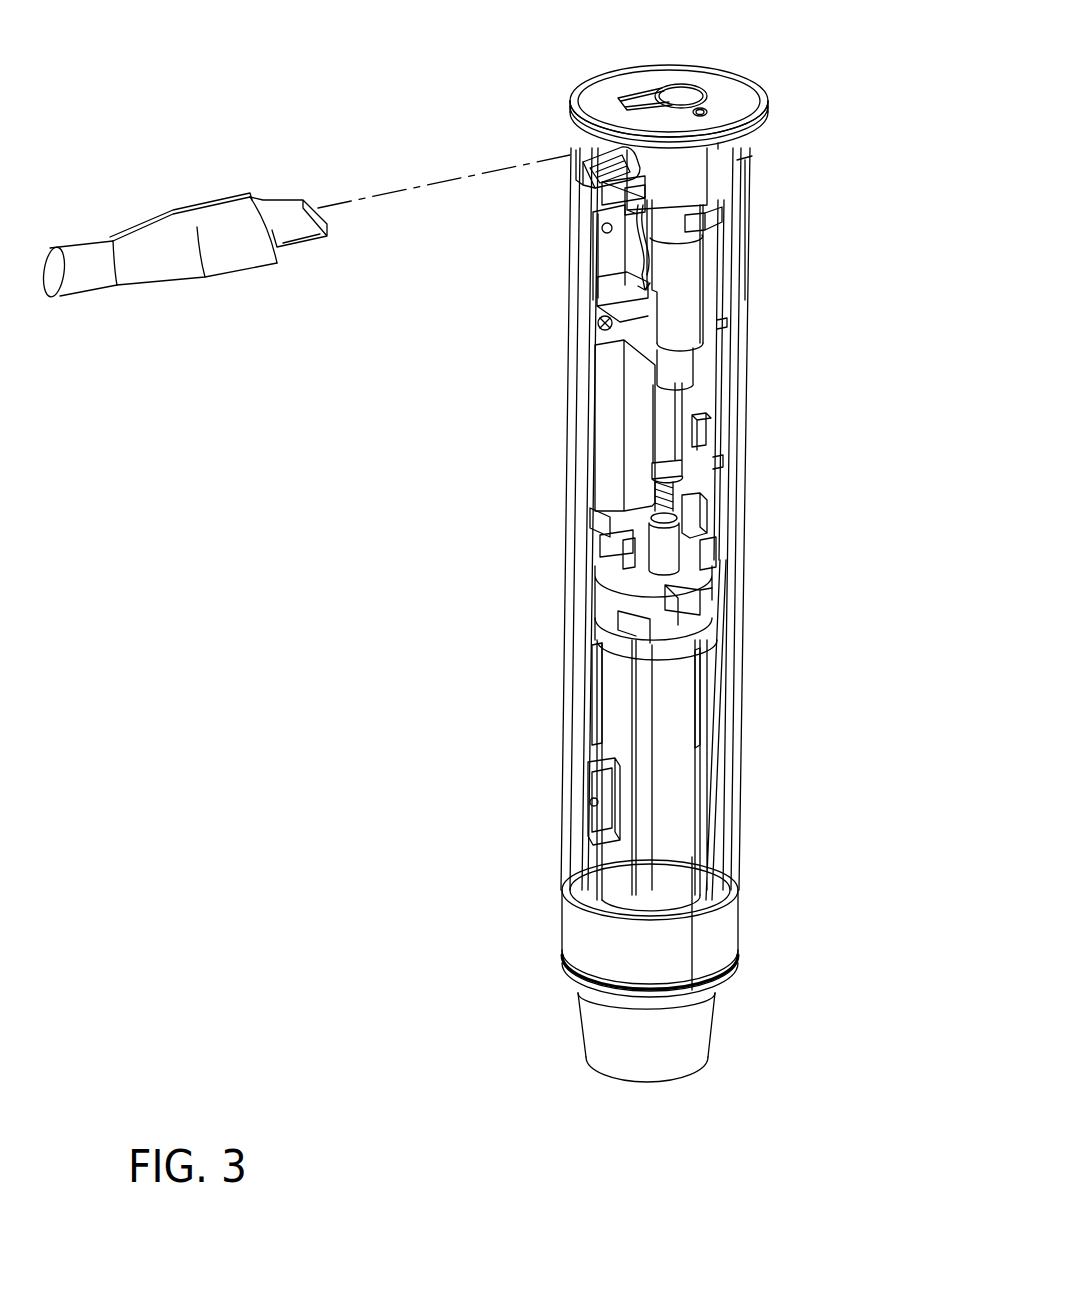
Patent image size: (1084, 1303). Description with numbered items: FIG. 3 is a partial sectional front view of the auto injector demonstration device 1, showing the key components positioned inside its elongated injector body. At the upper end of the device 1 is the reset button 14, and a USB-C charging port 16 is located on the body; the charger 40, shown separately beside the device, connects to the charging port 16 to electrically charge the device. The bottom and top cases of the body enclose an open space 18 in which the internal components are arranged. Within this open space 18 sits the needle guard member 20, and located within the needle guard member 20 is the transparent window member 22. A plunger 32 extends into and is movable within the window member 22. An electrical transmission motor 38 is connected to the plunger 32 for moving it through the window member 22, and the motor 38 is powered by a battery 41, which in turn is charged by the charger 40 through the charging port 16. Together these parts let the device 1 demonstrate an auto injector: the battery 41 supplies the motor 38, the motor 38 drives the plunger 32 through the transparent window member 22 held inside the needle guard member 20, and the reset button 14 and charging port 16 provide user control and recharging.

The auto injector demonstration device 1 is at (845, 147).
The reset button 14 is at (683, 95).
The USB-C charging port 16 is at (572, 165).
The open space 18 is at (705, 355).
The needle guard member 20 is at (668, 1033).
The transparent window member 22 is at (677, 740).
The plunger 32 is at (660, 548).
The electrical transmission motor 38 is at (675, 271).
The charger 40 is at (207, 217).
The battery 41 is at (608, 432).